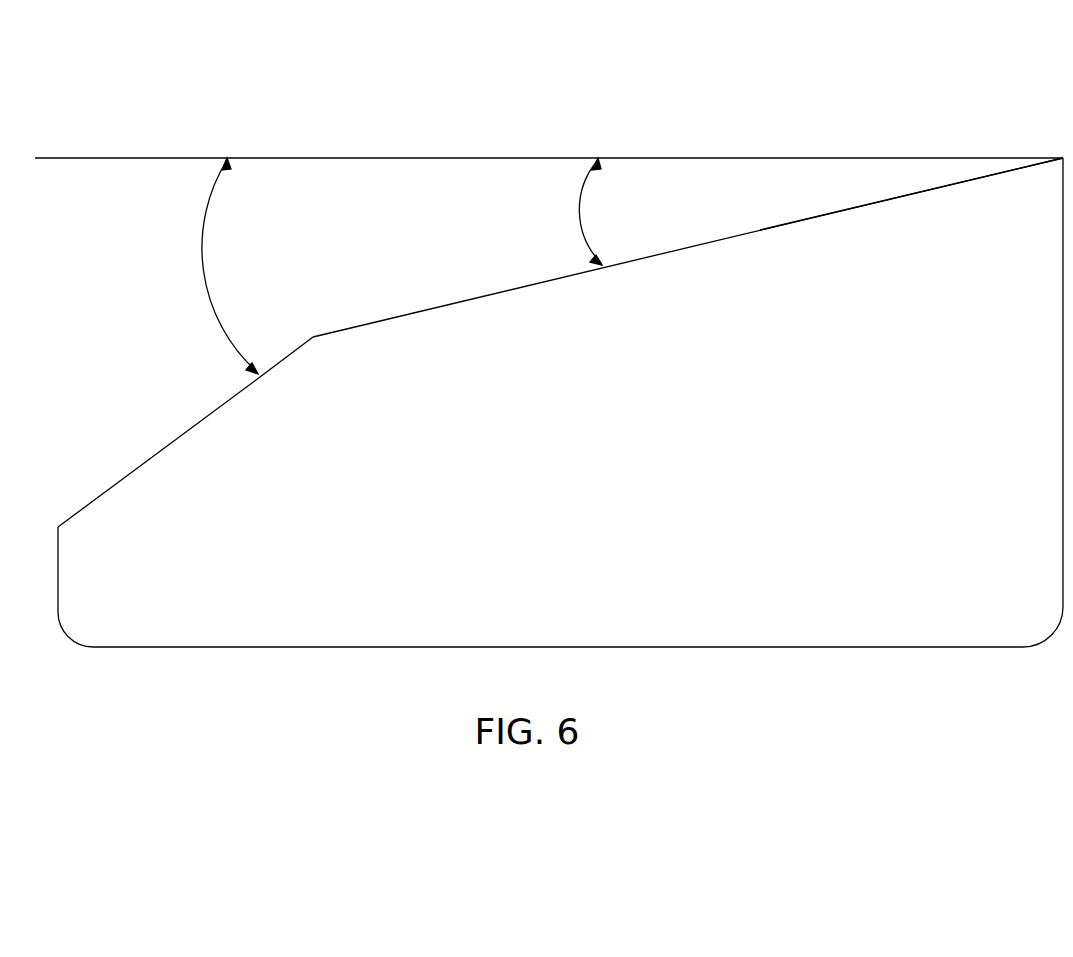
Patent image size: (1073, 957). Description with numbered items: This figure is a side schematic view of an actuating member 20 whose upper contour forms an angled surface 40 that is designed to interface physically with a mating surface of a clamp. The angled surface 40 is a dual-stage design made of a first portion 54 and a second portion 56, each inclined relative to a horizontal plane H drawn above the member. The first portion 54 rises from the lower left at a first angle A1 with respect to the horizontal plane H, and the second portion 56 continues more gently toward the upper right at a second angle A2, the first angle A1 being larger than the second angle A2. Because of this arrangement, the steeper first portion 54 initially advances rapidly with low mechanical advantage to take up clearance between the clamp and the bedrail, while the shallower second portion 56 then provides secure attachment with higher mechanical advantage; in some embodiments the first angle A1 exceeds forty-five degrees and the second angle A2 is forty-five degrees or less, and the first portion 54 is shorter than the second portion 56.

The actuating member 20 is at (788, 473).
The horizontal plane H is at (128, 158).
The second portion 56 is at (730, 238).
The angled surface 40 is at (818, 216).
The first portion 54 is at (143, 464).
The first angle A1 is at (230, 266).
The second angle A2 is at (598, 211).